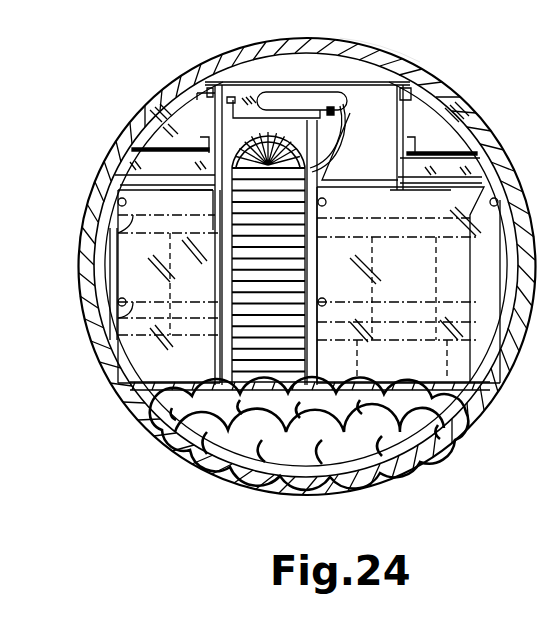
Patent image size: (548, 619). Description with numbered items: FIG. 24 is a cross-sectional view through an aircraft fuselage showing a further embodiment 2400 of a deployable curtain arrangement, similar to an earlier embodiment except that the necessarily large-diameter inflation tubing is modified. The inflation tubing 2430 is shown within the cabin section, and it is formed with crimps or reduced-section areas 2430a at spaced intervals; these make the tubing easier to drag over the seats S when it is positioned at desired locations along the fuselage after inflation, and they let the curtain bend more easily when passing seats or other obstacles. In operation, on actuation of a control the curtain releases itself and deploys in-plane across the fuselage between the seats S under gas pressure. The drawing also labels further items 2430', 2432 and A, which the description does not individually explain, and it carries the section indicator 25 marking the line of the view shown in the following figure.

The further embodiment 2400 is at (214, 56).
The inflation tubing 2430 is at (124, 261).
The upper modules 2430' is at (281, 122).
The crimps or reduced-section areas 2430a is at (125, 397).
The tanks 2432 is at (256, 100).
The hull A is at (375, 62).
The seats S is at (465, 235).
The section line for the following view 25 is at (262, 8).